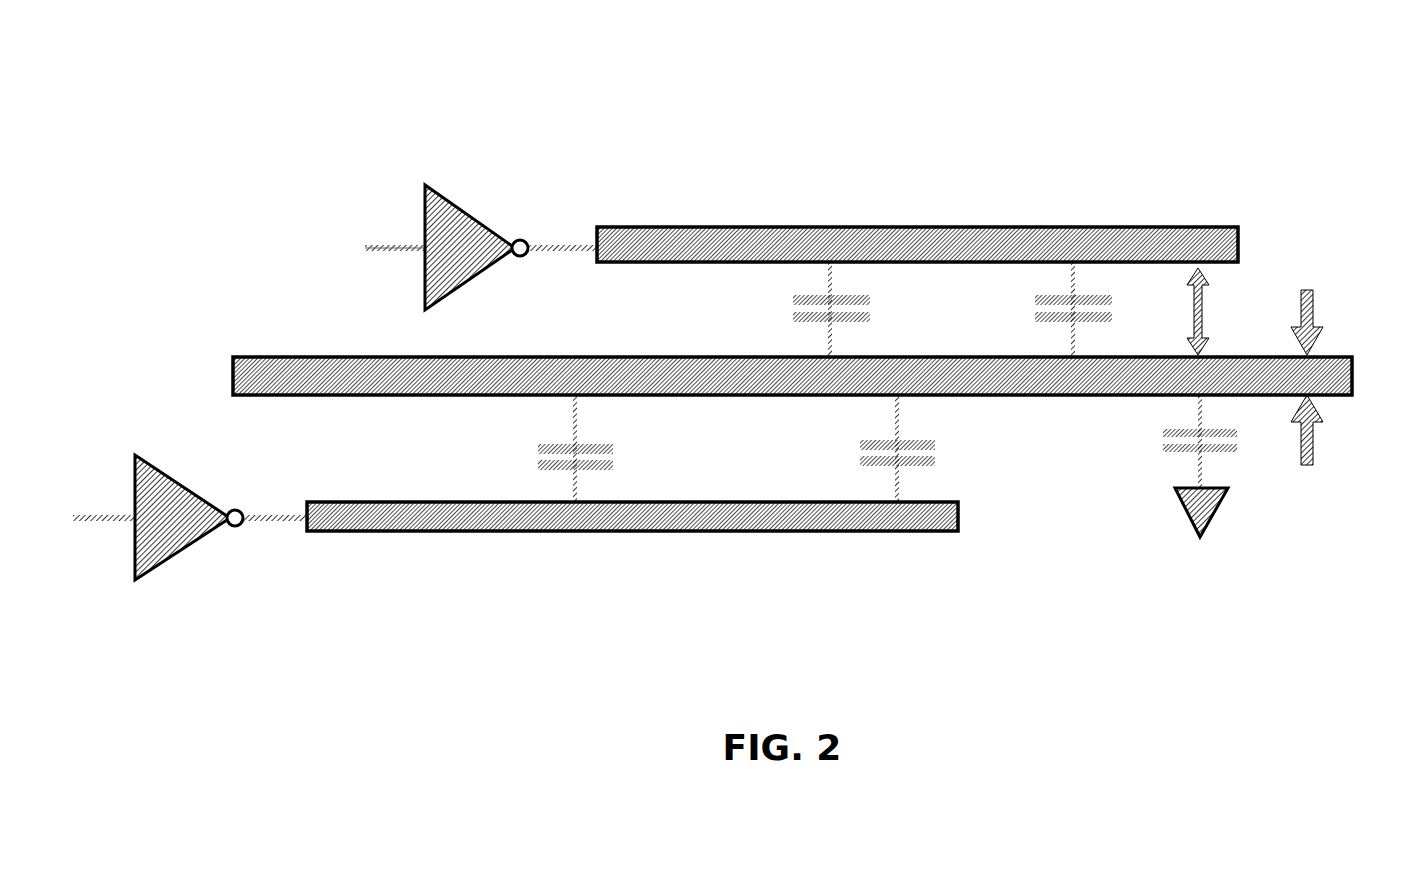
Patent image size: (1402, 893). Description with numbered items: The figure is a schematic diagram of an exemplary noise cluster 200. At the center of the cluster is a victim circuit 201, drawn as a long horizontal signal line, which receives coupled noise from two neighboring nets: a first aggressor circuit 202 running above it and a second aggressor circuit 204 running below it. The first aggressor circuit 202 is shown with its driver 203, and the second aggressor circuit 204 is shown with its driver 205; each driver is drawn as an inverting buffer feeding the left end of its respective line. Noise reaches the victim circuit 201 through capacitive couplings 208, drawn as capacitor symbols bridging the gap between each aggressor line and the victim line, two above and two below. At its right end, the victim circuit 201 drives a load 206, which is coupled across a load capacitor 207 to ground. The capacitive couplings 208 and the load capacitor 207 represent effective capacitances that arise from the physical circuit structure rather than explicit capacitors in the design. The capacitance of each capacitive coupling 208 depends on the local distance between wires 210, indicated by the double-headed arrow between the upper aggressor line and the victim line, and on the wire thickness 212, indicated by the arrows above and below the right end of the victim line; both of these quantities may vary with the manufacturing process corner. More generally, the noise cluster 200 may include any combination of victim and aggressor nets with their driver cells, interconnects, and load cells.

The noise cluster 200 is at (659, 157).
The victim circuit 201 is at (263, 372).
The first aggressor circuit 202 is at (743, 240).
The driver 203 is at (470, 232).
The second aggressor circuit 204 is at (490, 522).
The driver 205 is at (182, 523).
The load 206 is at (1205, 520).
The load capacitor 207 is at (1163, 447).
The capacitive couplings 208 is at (862, 306).
The local distance between wires 210 is at (1205, 317).
The wire thickness 212 is at (1315, 318).